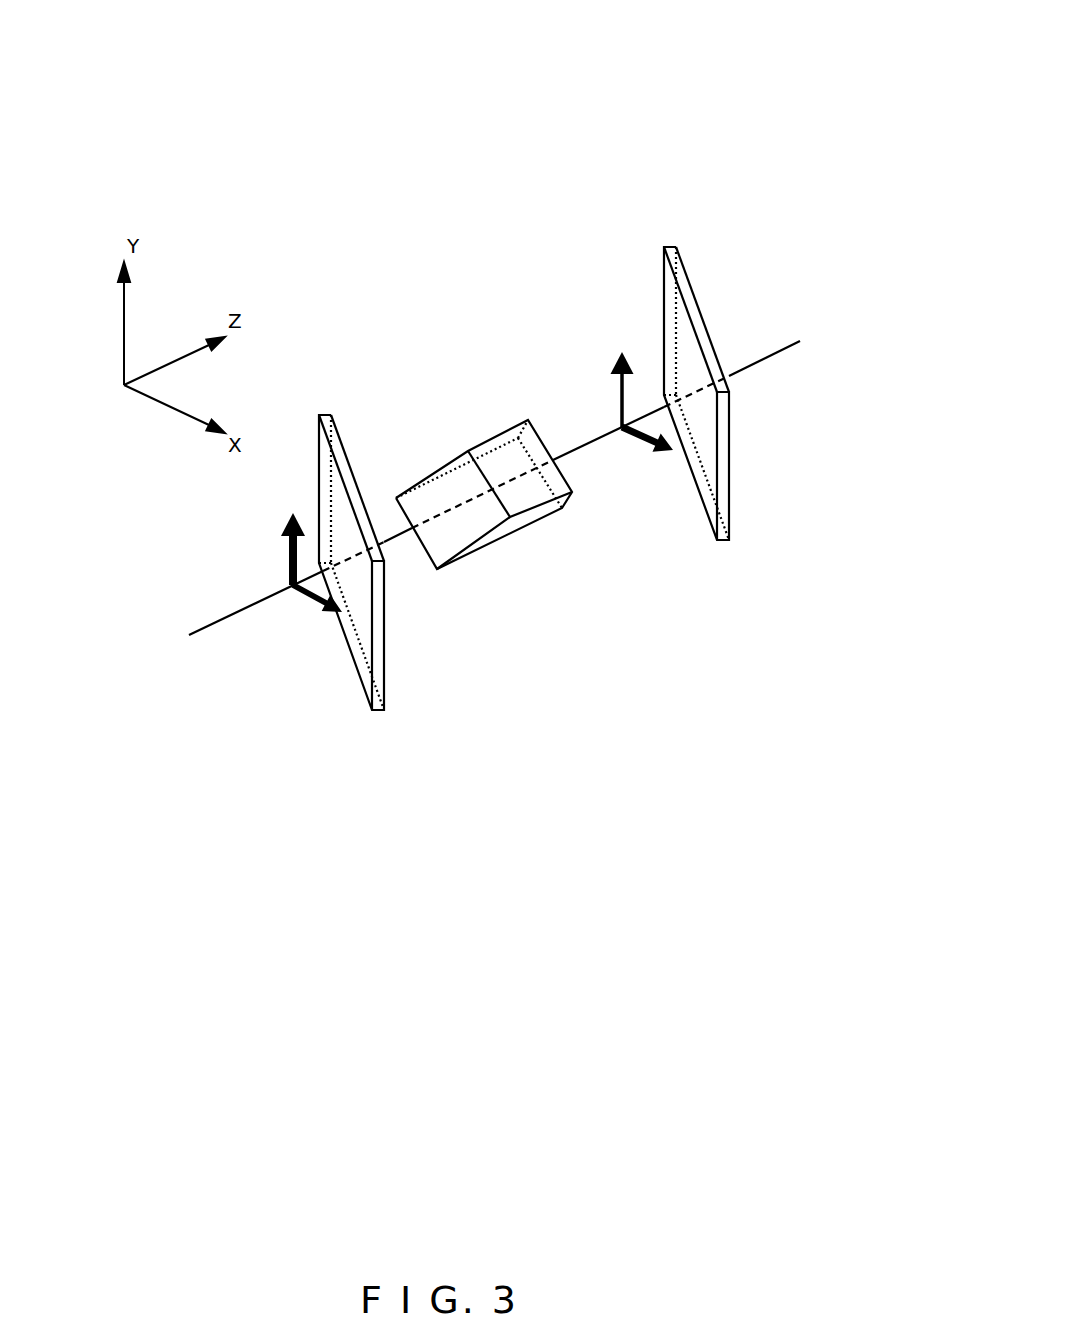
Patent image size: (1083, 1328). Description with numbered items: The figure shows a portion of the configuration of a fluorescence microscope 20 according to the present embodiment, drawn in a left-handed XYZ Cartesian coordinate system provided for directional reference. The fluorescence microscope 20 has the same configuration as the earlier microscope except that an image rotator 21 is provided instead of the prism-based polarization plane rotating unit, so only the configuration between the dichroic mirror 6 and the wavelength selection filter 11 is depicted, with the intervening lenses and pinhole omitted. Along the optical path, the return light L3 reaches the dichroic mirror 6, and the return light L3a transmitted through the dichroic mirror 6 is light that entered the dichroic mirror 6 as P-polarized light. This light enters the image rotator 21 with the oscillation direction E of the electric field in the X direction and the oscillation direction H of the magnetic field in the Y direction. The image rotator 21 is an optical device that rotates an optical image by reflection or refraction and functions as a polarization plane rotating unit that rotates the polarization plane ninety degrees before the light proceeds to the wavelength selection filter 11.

The fluorescence microscope 20 is at (830, 43).
The dichroic mirror 6 is at (375, 712).
The image rotator 21 is at (473, 530).
The wavelength selection filter 11 is at (722, 542).
The return light L3 is at (240, 612).
The return light transmitted through the dichroic mirror L3a is at (397, 525).